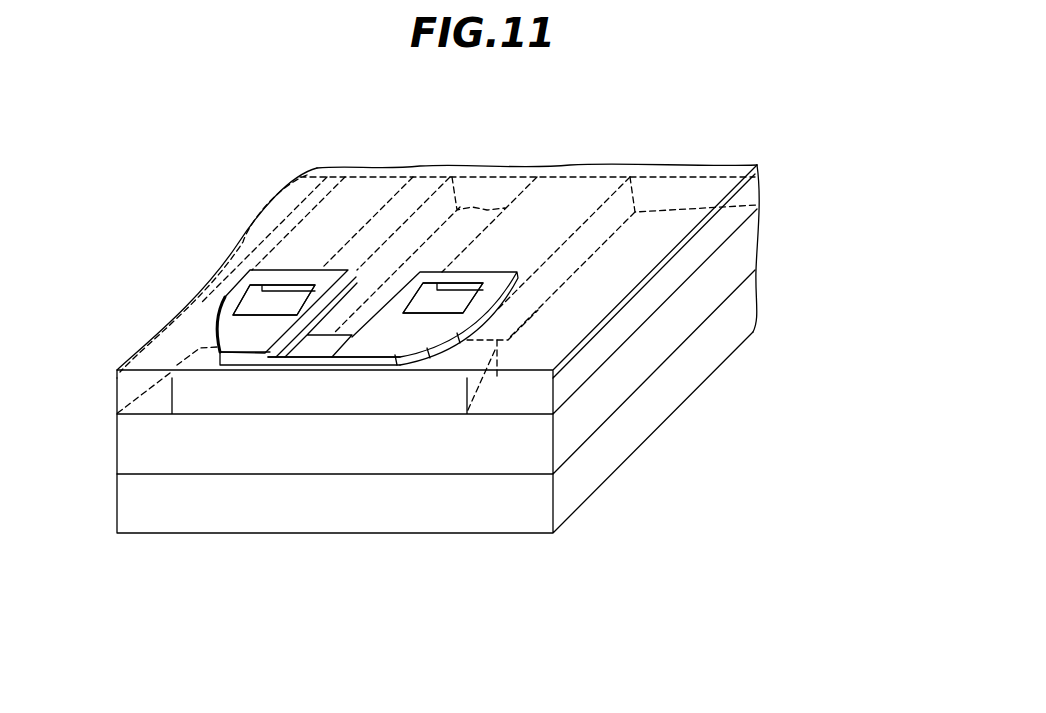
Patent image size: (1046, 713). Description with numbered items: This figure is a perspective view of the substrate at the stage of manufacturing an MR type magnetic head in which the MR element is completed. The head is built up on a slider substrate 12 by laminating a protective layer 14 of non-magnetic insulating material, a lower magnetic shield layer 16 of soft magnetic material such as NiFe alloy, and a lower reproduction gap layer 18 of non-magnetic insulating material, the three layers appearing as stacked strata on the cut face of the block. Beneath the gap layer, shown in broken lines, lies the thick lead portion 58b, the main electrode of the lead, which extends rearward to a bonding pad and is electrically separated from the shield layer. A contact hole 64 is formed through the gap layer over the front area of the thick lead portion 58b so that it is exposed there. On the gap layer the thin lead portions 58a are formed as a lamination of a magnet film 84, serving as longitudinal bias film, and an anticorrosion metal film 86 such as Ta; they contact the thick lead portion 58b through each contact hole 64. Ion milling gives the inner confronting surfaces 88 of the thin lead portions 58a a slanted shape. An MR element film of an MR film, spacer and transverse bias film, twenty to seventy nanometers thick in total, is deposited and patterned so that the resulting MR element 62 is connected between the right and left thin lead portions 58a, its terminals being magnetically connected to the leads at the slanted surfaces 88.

The slider substrate 12 is at (140, 503).
The protective layer 14 is at (140, 440).
The lower magnetic shield layer 16 is at (190, 393).
The lower reproduction gap layer 18 is at (707, 183).
The thin lead portion 58a is at (247, 335).
The thick lead portion 58b is at (553, 202).
The MR element 62 is at (300, 365).
The contact hole 64 is at (443, 303).
The magnet film 84 is at (498, 317).
The anticorrosion metal film 86 is at (510, 294).
The confronting surfaces 88 is at (400, 287).